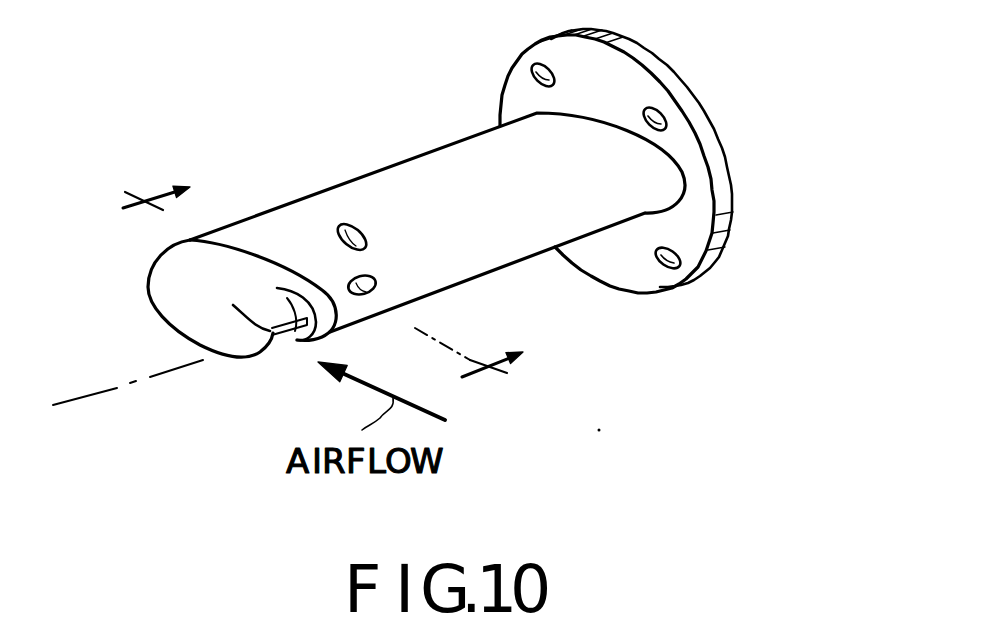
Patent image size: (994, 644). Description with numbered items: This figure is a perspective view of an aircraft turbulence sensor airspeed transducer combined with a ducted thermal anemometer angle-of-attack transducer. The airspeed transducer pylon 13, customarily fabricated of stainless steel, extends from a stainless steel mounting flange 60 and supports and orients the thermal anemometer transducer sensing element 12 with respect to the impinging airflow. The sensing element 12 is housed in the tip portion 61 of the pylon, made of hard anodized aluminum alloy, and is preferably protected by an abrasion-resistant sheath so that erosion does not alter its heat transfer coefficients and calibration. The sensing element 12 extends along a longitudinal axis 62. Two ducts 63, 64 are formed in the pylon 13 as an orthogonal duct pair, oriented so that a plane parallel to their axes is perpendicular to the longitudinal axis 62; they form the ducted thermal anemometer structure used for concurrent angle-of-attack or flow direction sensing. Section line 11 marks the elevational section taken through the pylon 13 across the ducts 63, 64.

The section line 11- 11 is at (323, 300).
The thermal anemometer transducer sensing element 12 is at (290, 340).
The airspeed transducer pylon 13 is at (420, 170).
The mounting flange 60 is at (683, 143).
The tip portion 61 is at (160, 278).
The longitudinal axis 62 is at (102, 390).
The duct 63 is at (378, 274).
The duct 64 is at (347, 228).